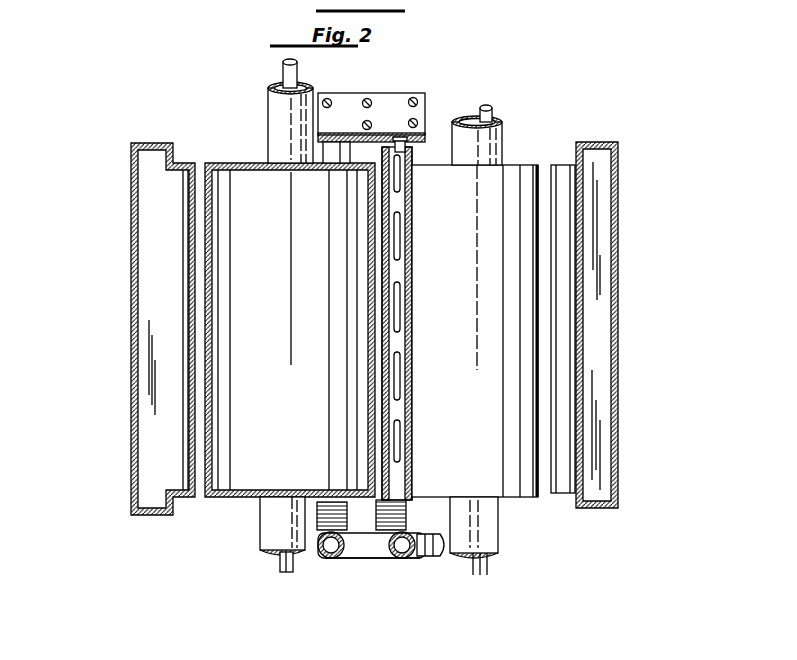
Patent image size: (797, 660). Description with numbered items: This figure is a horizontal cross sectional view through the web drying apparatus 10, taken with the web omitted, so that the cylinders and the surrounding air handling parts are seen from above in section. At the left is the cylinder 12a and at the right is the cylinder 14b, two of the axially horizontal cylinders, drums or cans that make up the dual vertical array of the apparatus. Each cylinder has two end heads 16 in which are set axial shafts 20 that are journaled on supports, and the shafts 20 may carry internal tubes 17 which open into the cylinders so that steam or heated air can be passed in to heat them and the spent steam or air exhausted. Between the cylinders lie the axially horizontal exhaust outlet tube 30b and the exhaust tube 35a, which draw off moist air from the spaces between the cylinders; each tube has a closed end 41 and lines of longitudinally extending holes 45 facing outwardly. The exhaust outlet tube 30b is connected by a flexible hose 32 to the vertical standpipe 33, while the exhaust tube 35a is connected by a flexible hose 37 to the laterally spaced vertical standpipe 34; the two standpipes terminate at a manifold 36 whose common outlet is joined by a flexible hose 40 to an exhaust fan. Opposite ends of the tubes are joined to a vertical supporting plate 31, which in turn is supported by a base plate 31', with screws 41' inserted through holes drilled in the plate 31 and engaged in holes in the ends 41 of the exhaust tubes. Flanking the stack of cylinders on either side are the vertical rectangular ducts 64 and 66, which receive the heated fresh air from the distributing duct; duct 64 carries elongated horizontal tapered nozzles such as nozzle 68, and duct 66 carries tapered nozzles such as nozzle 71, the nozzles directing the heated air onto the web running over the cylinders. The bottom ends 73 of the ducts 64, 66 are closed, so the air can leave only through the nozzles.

The web drying apparatus 10 is at (121, 586).
The cylinder 12a is at (230, 248).
The cylinder 14b is at (510, 195).
The end head 16 is at (250, 490).
The internal tube 17 is at (285, 560).
The axial shaft 20 is at (283, 128).
The exhaust outlet tube 30b is at (328, 502).
The vertical supporting plate 31 is at (381, 108).
The base plate 31' is at (371, 101).
The flexible hose 32 is at (352, 545).
The vertical standpipe 33 is at (318, 545).
The vertical standpipe 34 is at (408, 560).
The exhaust tube 35a is at (400, 340).
The manifold 36 is at (348, 552).
The flexible hose 37 is at (405, 524).
The flexible hose 40 is at (437, 556).
The closed end 41 is at (439, 121).
The screw 41' is at (437, 105).
The longitudinally extending holes 45 is at (398, 370).
The vertical rectangular duct 64 is at (130, 330).
The vertical rectangular duct 66 is at (618, 304).
The tapered nozzle 68 is at (192, 482).
The tapered nozzle 71 is at (560, 263).
The bottom end 73 is at (158, 418).